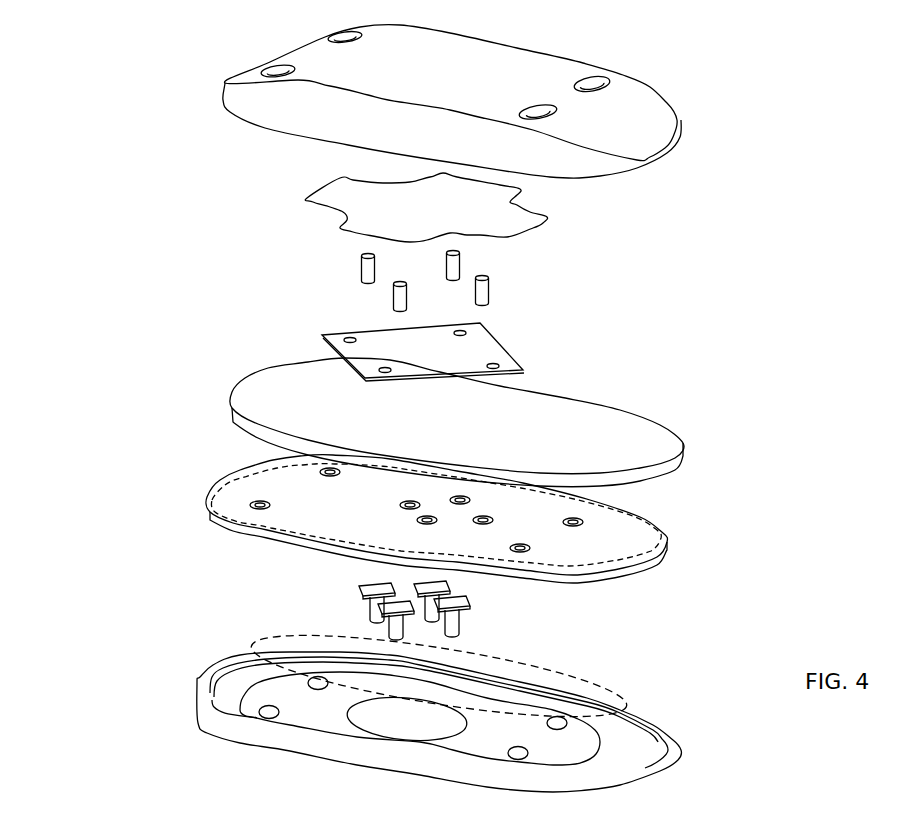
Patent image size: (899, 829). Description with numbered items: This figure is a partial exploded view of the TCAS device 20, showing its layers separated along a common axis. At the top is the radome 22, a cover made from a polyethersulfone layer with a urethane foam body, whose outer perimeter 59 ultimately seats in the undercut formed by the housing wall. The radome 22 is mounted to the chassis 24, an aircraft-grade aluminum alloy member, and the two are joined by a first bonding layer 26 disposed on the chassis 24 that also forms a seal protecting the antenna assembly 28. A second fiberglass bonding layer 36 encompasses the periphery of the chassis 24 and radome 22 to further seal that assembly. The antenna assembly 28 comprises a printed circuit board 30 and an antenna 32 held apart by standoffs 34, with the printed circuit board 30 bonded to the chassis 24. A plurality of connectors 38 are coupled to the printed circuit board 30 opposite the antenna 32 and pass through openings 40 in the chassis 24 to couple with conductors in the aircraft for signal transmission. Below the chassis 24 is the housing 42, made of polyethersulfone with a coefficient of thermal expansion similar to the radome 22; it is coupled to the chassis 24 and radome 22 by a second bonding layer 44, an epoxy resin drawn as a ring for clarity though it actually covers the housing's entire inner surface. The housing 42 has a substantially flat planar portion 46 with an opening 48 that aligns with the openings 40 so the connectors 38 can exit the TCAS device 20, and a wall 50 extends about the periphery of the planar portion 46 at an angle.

The TCAS device 20 is at (826, 197).
The radome 22 is at (277, 52).
The chassis 24 is at (231, 468).
The first bonding layer 26 is at (648, 521).
The antenna assembly 28 is at (598, 288).
The printed circuit board 30 is at (325, 336).
The antenna 32 is at (307, 198).
The standoffs 34 is at (360, 267).
The second fiberglass bonding layer 36 is at (612, 398).
The connectors 38 is at (470, 604).
The openings 40 is at (418, 519).
The housing 42 is at (198, 686).
The second bonding layer 44 is at (257, 643).
The planar portion 46 is at (312, 712).
The opening 48 is at (445, 740).
The wall 50 is at (650, 757).
The outer perimeter 59 is at (287, 110).